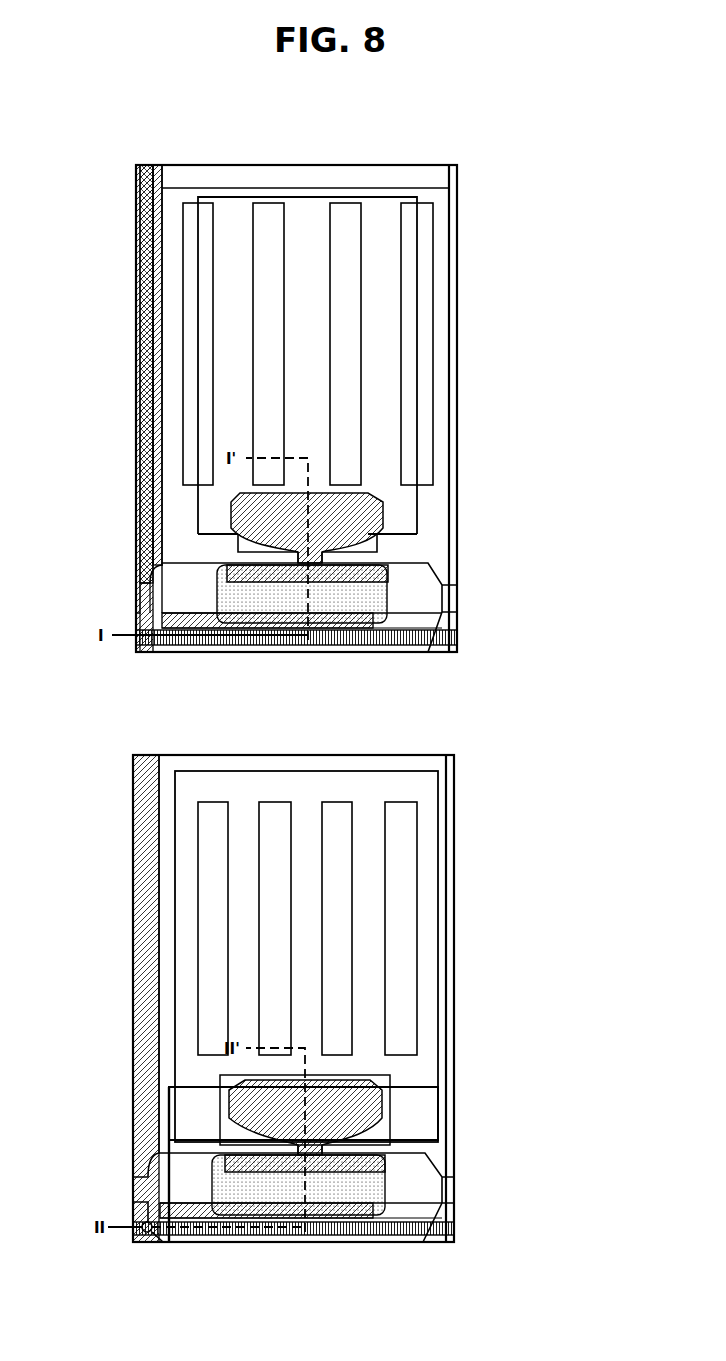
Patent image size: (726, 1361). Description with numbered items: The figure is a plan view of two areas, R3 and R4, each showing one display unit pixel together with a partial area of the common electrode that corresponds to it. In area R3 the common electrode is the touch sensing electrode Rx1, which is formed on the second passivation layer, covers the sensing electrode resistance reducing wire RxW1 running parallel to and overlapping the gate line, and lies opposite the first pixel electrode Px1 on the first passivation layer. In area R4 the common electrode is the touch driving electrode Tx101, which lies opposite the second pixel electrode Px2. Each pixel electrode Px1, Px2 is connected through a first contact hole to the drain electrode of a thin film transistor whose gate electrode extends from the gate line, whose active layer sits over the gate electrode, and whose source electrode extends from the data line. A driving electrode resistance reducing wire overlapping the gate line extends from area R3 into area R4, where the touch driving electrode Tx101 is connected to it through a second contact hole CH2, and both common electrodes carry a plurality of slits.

The area R3 is at (73, 181).
The area R4 is at (73, 775).
The sensing electrode resistance reducing wire RxW1 is at (146, 165).
The first receive electrode (first common electrode COM1) Rx1 is at (449, 246).
The transmit electrode (second common electrode COM2) Tx101 is at (446, 835).
The first pixel electrode Px1 is at (410, 523).
The second pixel electrode Px2 is at (438, 1112).
The second contact hole CH2 is at (140, 1236).